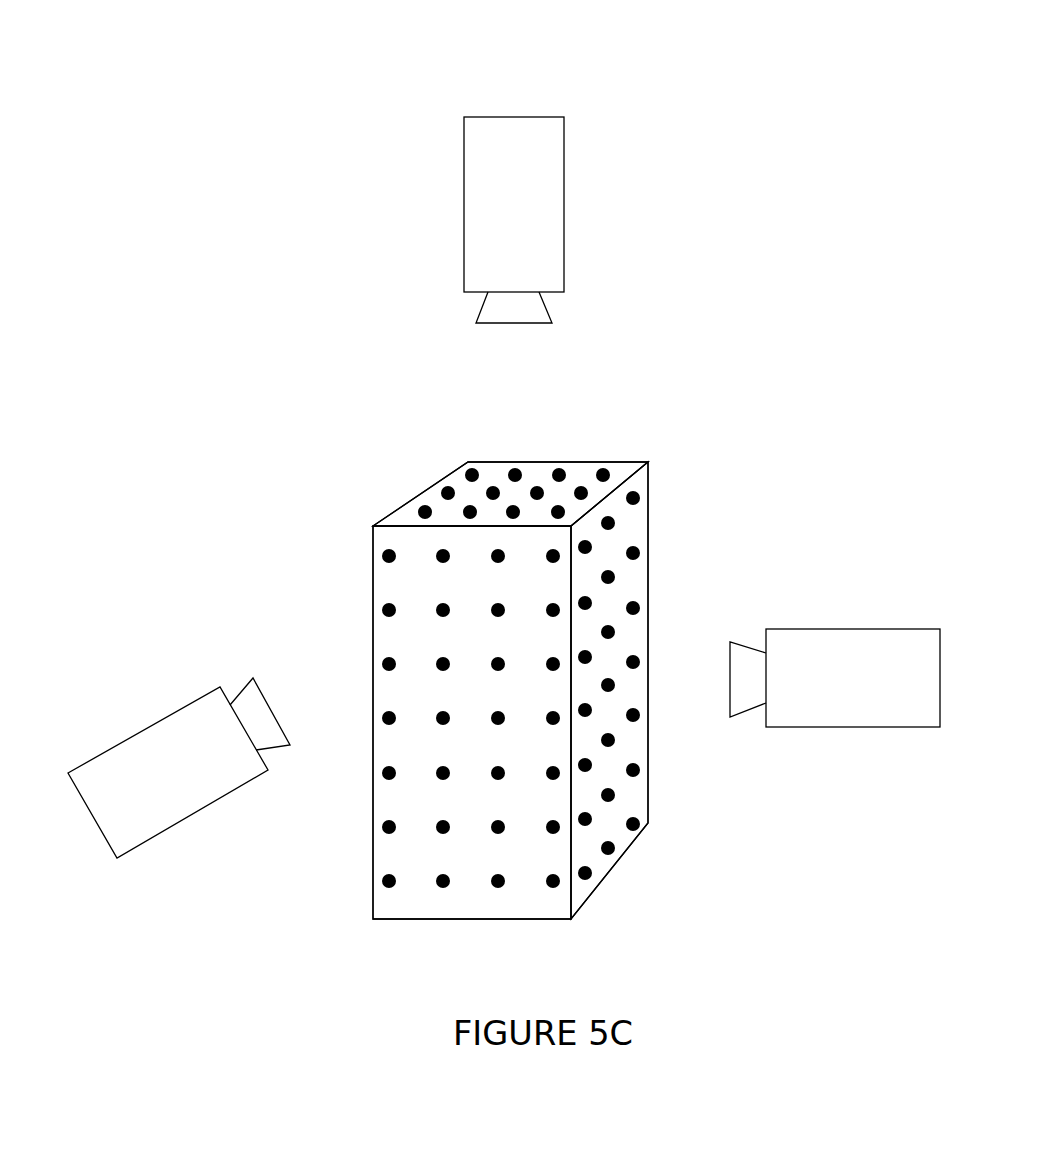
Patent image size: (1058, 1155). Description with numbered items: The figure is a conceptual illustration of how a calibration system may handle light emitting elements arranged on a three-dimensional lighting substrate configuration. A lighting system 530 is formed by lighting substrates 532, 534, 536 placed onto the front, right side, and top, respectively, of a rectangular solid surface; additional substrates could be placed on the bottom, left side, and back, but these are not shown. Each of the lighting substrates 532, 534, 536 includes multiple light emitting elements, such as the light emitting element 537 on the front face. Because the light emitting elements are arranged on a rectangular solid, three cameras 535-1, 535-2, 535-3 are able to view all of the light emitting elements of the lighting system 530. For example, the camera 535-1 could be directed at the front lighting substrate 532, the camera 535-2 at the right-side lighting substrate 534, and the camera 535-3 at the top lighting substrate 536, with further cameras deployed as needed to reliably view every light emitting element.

The lighting system 530 is at (624, 392).
The lighting substrate 532 is at (373, 547).
The lighting substrate 534 is at (648, 528).
The lighting substrate 536 is at (510, 462).
The light emitting element 537 is at (384, 612).
The camera 535-1 is at (96, 757).
The camera 535-2 is at (883, 702).
The camera 535-3 is at (506, 117).